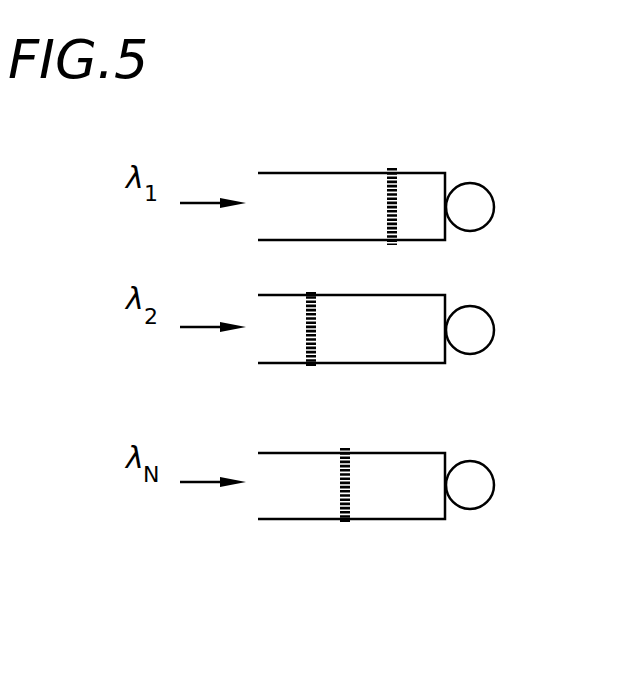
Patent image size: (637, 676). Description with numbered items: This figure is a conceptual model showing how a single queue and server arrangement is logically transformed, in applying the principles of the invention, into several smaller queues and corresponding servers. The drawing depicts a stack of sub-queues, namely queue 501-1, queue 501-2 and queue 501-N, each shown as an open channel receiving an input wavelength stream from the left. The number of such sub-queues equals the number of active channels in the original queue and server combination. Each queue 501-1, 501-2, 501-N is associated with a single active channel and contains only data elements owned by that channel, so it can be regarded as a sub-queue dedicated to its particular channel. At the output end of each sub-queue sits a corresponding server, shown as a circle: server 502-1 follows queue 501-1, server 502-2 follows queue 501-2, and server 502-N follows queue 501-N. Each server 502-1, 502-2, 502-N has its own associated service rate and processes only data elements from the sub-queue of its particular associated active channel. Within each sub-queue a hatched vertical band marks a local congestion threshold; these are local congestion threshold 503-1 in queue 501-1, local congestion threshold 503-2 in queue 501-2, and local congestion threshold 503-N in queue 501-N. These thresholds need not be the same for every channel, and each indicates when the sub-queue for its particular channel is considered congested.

The queue 501-1 is at (300, 173).
The local congestion threshold 503-1 is at (392, 168).
The server 502-1 is at (473, 183).
The queue 501-2 is at (340, 364).
The local congestion threshold 503-2 is at (313, 368).
The server 502-2 is at (473, 306).
The queue 501-N is at (360, 520).
The local congestion threshold 503-N is at (345, 522).
The server 502-N is at (473, 461).